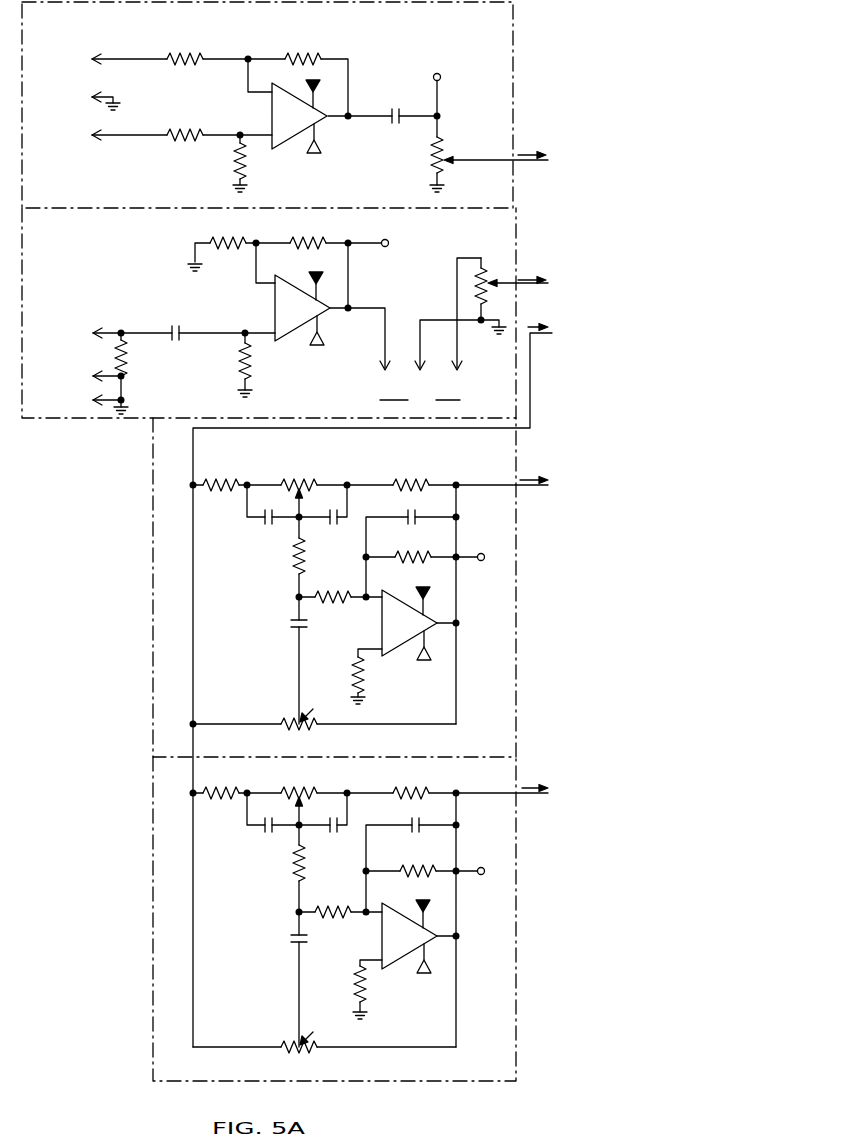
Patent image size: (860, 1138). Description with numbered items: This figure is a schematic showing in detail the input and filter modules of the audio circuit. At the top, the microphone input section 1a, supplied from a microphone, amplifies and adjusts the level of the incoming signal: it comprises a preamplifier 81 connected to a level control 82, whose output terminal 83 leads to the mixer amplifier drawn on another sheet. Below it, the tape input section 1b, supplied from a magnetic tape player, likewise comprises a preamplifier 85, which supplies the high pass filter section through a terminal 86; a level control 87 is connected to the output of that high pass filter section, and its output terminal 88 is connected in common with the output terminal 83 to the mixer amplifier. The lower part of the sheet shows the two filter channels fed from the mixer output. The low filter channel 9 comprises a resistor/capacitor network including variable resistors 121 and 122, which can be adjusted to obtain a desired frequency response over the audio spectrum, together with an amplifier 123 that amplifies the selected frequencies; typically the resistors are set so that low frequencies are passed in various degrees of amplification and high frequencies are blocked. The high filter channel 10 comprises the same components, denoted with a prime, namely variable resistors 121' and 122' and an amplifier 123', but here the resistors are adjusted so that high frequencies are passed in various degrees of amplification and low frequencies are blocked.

The microphone input section 1a is at (332, 105).
The tape input section 1b is at (332, 313).
The low filter channel 9 is at (393, 587).
The high filter channel 10 is at (388, 907).
The preamplifier 81 is at (291, 134).
The level control 82 is at (442, 146).
The output terminal 83 is at (448, 166).
The preamplifier 85 is at (290, 333).
The terminal 86 is at (385, 338).
The level control 87 is at (483, 272).
The output terminal 88 is at (487, 290).
The variable resistor 121 is at (312, 503).
The variable resistor 122 is at (324, 715).
The amplifier 123 is at (419, 623).
The variable resistor 121' is at (314, 811).
The variable resistor 122' is at (324, 1038).
The amplifier 123' is at (419, 936).